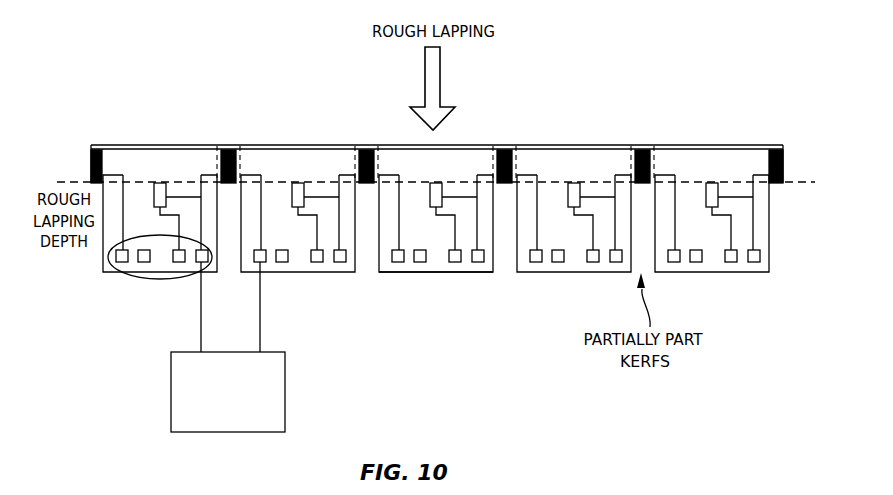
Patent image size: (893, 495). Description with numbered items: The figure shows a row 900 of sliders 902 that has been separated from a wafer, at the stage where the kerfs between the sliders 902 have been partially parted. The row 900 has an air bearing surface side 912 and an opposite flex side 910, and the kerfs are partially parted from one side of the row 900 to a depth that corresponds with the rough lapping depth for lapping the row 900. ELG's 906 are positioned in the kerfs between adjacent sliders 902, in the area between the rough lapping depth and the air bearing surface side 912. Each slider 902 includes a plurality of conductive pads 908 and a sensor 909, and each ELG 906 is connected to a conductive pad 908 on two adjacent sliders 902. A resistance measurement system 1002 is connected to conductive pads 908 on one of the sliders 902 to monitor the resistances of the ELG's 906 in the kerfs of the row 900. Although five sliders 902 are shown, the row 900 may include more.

The row 900 is at (381, 387).
The slider 902 is at (112, 274).
The ELG 906 is at (226, 152).
The conductive pad 908 is at (137, 279).
The sensor 909 is at (154, 189).
The flex side 910 is at (460, 297).
The air bearing surface side 912 is at (175, 121).
The resistance measurement system 1002 is at (171, 385).